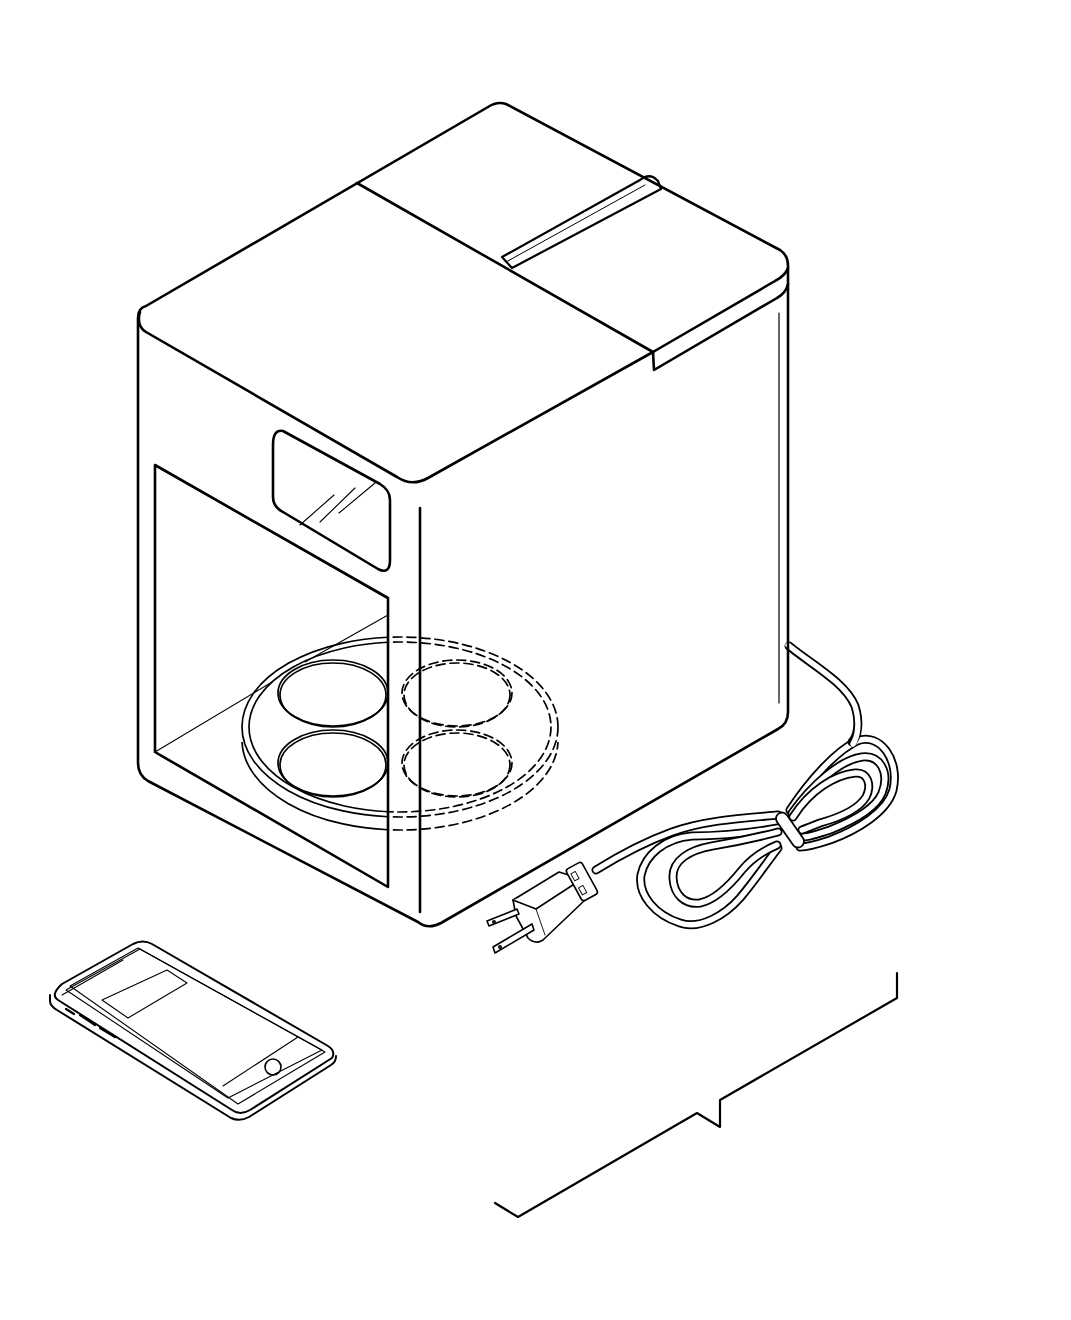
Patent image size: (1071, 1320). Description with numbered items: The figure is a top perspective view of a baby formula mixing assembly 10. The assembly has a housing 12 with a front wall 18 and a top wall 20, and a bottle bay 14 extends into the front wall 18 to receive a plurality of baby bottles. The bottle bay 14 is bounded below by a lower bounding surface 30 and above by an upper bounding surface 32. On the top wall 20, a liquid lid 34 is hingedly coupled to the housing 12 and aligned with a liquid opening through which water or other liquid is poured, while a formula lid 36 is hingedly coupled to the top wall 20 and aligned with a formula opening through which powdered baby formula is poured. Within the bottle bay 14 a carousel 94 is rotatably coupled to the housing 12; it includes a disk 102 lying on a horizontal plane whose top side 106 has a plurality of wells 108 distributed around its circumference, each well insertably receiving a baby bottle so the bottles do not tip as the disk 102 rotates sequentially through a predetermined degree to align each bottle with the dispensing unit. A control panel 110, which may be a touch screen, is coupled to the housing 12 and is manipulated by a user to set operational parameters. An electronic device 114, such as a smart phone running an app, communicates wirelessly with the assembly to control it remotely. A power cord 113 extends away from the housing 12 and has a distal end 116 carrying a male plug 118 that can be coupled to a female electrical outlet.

The baby formula mixing assembly 10 is at (256, 112).
The housing 12 is at (231, 253).
The bottle bay 14 is at (182, 563).
The front wall 18 is at (153, 420).
The top wall 20 is at (338, 217).
The lower bounding surface 30 is at (200, 754).
The upper bounding surface 32 is at (197, 490).
The liquid lid 34 is at (729, 224).
The formula lid 36 is at (583, 140).
The carousel 94 is at (232, 783).
The disk 102 is at (312, 812).
The top side 106 is at (262, 710).
The wells 108 is at (306, 756).
The control panel 110 is at (273, 434).
The power cord 113 is at (893, 797).
The electronic device 114 is at (105, 964).
The distal end 116 is at (607, 876).
The male plug 118 is at (547, 927).